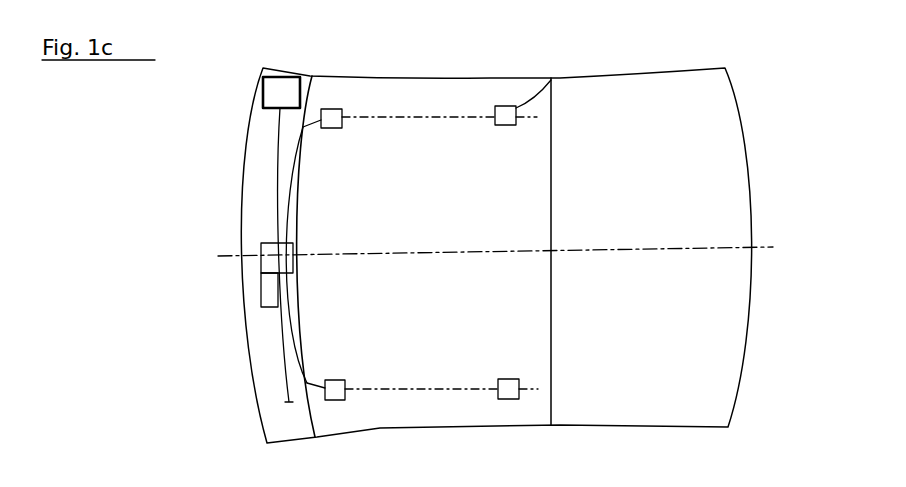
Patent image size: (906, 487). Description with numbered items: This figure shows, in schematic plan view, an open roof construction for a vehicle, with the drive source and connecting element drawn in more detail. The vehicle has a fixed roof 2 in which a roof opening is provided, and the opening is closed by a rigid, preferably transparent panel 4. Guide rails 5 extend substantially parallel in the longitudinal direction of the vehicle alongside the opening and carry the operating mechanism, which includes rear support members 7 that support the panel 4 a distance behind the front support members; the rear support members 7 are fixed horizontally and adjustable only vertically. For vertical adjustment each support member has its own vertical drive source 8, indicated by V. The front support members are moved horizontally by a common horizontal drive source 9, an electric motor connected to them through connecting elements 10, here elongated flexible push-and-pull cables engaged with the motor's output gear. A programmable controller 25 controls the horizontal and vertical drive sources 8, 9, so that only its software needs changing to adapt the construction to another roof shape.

The fixed roof 2 is at (707, 103).
The panel 4 is at (413, 165).
The guide rail 5 is at (377, 98).
The rear support member 7 is at (551, 78).
The vertical drive source 8 is at (343, 400).
The horizontal drive source 9 is at (273, 285).
The connecting element 10 is at (290, 158).
The programmable controller 25 is at (281, 239).